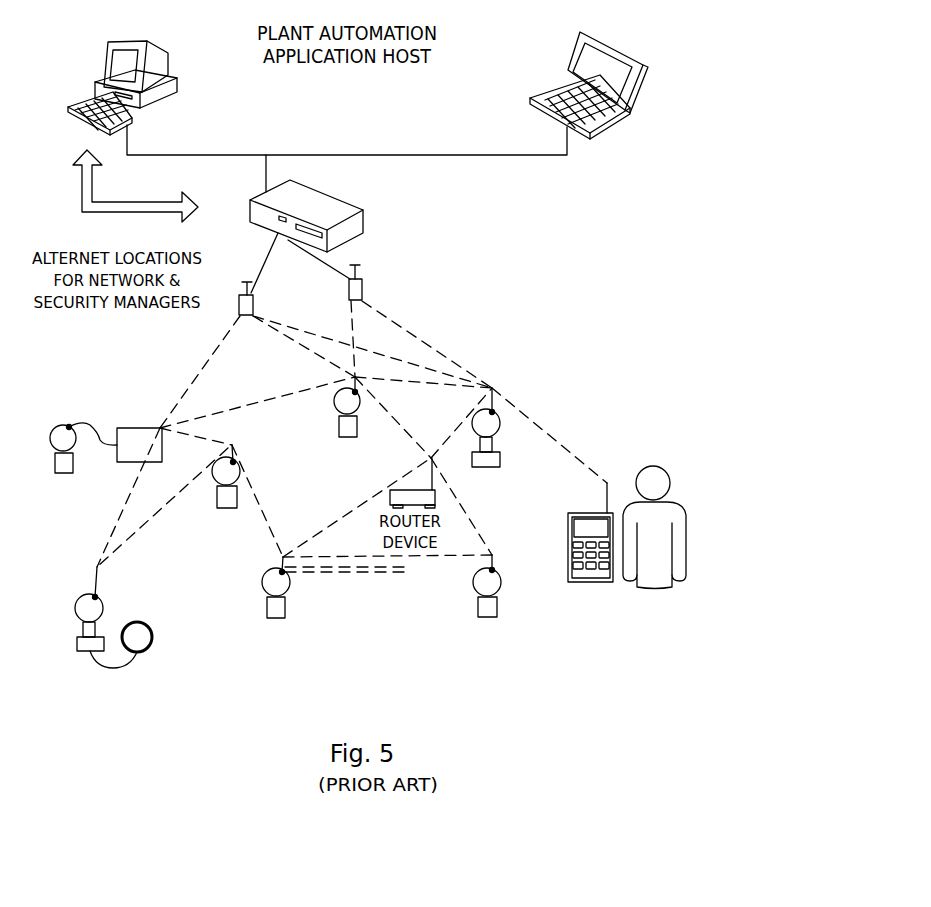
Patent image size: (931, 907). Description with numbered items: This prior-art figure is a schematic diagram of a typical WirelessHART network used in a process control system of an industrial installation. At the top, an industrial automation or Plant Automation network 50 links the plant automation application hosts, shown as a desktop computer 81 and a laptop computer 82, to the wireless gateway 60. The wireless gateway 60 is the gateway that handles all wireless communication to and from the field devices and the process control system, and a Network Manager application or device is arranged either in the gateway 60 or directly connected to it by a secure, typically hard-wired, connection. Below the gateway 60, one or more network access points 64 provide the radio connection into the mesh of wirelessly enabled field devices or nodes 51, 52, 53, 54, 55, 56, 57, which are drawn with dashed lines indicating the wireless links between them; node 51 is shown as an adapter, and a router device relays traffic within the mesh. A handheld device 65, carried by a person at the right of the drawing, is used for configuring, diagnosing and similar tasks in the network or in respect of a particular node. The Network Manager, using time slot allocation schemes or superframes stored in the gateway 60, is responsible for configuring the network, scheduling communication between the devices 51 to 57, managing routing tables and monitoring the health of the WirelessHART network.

The Plant Automation network 50 is at (412, 123).
The wirelessly enabled field device 51 is at (48, 436).
The wirelessly enabled field device 52 is at (78, 644).
The wirelessly enabled field device 53 is at (217, 492).
The wirelessly enabled field device 54 is at (267, 606).
The wirelessly enabled field device 55 is at (478, 602).
The wirelessly enabled field device 56 is at (339, 421).
The wirelessly enabled field device 57 is at (500, 413).
The wireless gateway 60 is at (440, 205).
The network access point 64 is at (474, 271).
The handheld device 65 is at (568, 541).
The plant automation application host computer 81 is at (102, 73).
The plant automation application host laptop 82 is at (640, 91).